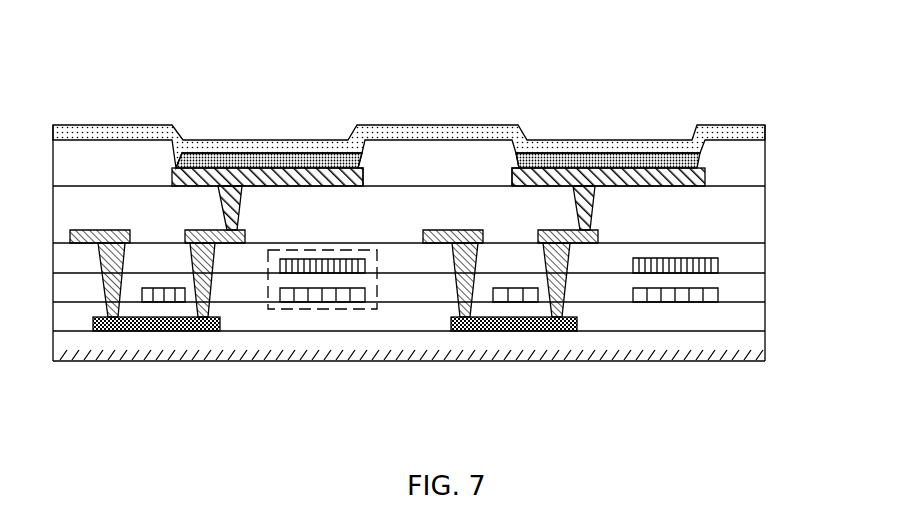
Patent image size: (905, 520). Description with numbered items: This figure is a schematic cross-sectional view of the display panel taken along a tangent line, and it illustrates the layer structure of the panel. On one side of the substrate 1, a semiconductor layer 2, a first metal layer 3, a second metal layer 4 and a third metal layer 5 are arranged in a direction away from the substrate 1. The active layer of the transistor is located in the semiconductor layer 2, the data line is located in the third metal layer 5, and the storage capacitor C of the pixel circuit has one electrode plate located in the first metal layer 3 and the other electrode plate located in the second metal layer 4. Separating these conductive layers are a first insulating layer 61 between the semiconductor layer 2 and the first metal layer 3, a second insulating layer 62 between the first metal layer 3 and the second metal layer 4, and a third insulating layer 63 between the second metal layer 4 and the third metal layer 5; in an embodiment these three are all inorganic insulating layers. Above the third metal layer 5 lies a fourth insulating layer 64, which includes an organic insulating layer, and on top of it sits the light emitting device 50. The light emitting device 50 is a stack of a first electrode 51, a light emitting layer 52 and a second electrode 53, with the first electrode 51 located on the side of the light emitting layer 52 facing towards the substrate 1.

The substrate 1 is at (733, 354).
The semiconductor layer 2 is at (521, 331).
The first metal layer 3 is at (312, 302).
The second metal layer 4 is at (340, 273).
The third metal layer 5 is at (593, 243).
The storage capacitor C is at (275, 310).
The light emitting device 50 is at (650, 53).
The first electrode 51 is at (552, 176).
The light emitting layer 52 is at (600, 163).
The second electrode 53 is at (647, 147).
The first insulating layer 61 is at (733, 313).
The second insulating layer 62 is at (733, 285).
The third insulating layer 63 is at (733, 258).
The fourth insulating layer 64 is at (733, 220).